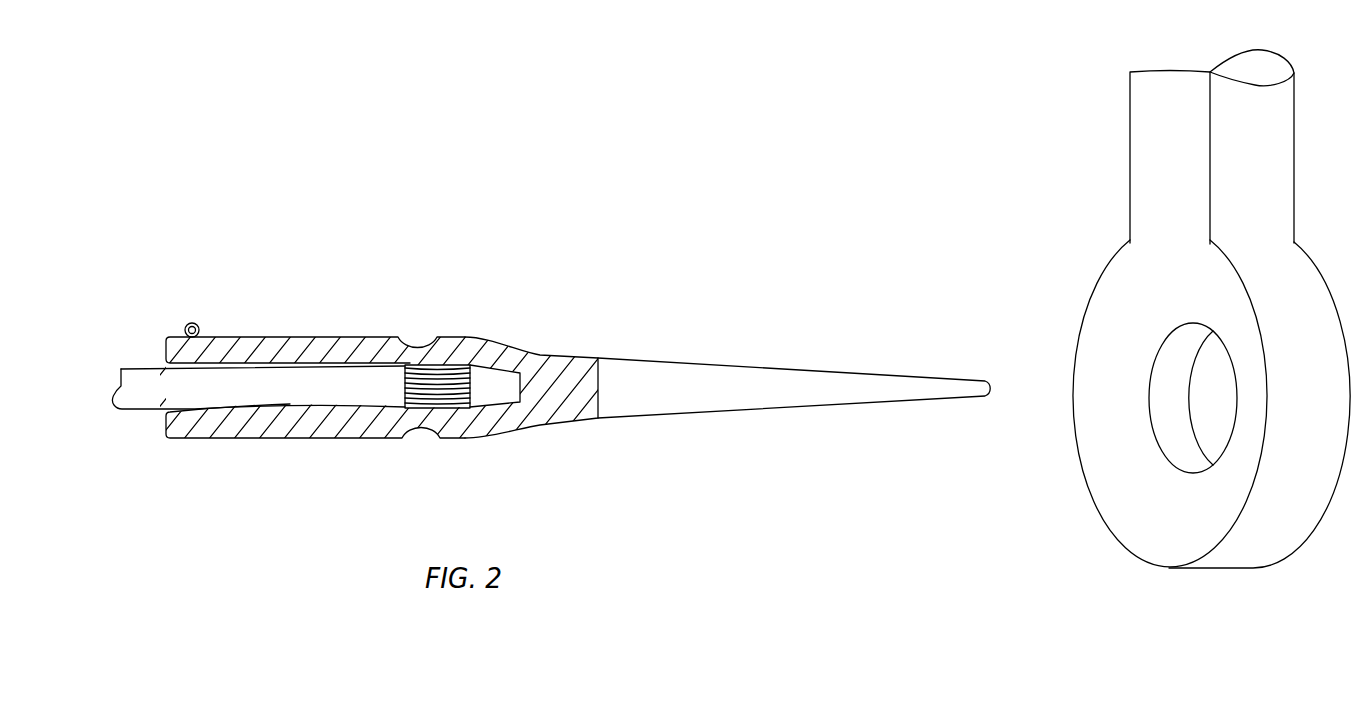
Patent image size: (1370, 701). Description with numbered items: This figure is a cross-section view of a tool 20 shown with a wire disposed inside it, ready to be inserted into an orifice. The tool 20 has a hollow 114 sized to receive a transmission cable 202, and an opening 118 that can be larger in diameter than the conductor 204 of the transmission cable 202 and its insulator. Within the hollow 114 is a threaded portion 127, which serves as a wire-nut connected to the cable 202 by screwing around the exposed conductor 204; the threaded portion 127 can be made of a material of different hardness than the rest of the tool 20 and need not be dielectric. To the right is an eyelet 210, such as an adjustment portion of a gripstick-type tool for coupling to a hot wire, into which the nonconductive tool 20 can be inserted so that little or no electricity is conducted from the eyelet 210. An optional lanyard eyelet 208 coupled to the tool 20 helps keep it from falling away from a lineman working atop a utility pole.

The tool 20 is at (347, 324).
The hollow 114 is at (168, 366).
The opening 118 is at (162, 414).
The transmission cable 202 is at (130, 410).
The conductor 204 is at (412, 409).
The threaded portion 127 is at (498, 372).
The lanyard eyelet 208 is at (183, 333).
The eyelet 210 is at (1116, 289).